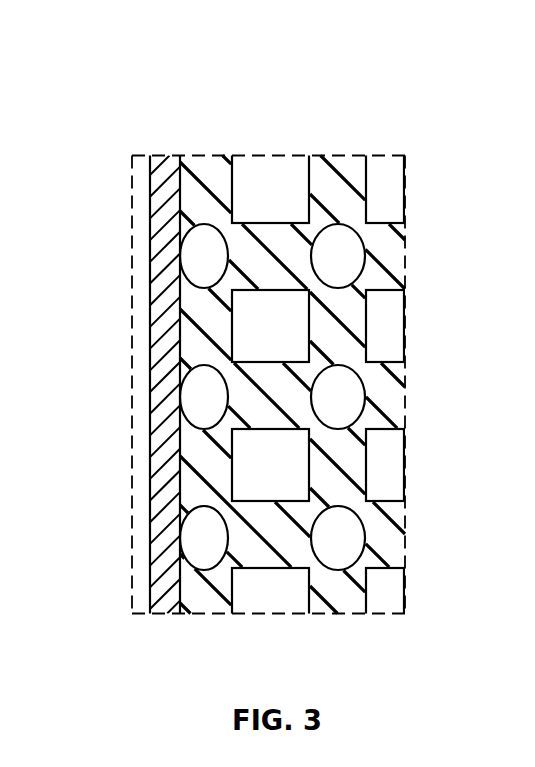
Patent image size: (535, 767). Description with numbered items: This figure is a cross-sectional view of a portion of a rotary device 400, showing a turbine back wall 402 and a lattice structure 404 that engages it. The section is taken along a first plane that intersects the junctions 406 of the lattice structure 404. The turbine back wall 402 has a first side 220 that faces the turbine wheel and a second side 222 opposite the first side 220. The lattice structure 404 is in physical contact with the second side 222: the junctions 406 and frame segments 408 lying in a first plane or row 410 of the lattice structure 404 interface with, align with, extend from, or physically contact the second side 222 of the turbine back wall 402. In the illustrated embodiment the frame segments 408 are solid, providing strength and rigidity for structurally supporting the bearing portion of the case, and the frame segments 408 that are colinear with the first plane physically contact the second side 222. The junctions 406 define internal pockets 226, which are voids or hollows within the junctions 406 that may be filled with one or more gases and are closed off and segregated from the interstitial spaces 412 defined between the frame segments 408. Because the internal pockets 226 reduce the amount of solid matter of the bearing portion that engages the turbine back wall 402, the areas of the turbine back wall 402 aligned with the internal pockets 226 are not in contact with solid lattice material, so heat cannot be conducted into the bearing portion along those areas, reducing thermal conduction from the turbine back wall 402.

The rotary device 400 is at (272, 360).
The turbine back wall 402 is at (165, 242).
The lattice structure 404 is at (309, 186).
The junctions 406 is at (234, 251).
The frame segments 408 is at (272, 348).
The first plane or row 410 is at (200, 631).
The interstitial spaces 412 is at (295, 324).
The first side 220 is at (149, 478).
The second side 222 is at (181, 484).
The internal pockets 226 is at (198, 229).